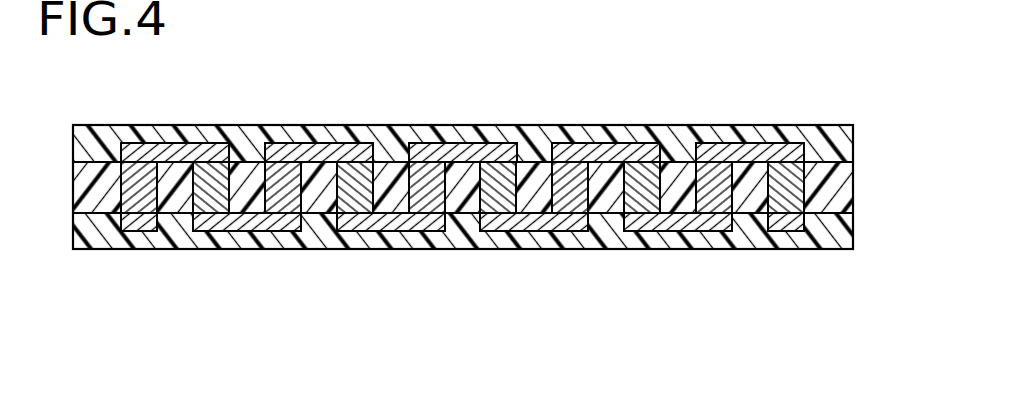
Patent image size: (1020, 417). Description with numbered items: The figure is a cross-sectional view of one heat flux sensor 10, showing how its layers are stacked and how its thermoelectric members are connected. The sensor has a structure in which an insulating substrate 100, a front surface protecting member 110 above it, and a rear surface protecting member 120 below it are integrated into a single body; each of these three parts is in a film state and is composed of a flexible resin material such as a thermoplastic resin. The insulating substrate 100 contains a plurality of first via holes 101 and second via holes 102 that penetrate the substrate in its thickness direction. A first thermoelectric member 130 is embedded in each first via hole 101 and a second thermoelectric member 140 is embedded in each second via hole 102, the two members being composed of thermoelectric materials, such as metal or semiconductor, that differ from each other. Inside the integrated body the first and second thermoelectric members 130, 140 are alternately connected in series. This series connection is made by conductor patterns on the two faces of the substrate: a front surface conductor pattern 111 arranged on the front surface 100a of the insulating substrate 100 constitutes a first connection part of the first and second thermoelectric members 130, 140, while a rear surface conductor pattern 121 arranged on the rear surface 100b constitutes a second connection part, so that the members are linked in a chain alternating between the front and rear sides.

The heat flux sensor 10 is at (338, 103).
The insulating substrate 100 is at (842, 185).
The front surface 100a is at (104, 158).
The rear surface 100b is at (85, 213).
The front surface protecting member 110 is at (828, 147).
The rear surface protecting member 120 is at (835, 242).
The front surface conductor pattern 111 is at (767, 153).
The rear surface conductor pattern 121 is at (650, 225).
The first via hole 101 is at (722, 195).
The second via hole 102 is at (790, 198).
The first thermoelectric member 130 is at (713, 190).
The second thermoelectric member 140 is at (792, 195).